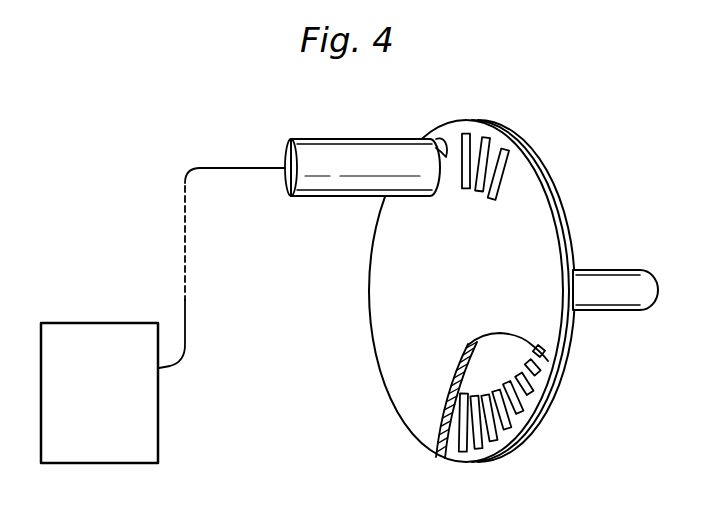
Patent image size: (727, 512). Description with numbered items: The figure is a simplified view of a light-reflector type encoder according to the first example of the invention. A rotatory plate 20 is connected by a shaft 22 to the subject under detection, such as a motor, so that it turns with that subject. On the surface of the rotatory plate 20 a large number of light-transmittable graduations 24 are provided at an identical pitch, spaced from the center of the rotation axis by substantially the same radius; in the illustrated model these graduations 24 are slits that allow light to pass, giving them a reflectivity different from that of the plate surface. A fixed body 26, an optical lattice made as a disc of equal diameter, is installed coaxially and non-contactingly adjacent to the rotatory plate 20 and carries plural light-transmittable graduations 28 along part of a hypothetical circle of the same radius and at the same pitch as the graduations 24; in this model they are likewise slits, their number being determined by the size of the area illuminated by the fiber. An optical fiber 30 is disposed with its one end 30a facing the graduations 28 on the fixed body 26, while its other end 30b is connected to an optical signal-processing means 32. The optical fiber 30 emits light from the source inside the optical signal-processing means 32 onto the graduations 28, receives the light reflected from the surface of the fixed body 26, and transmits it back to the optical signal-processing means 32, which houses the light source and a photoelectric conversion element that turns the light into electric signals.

The rotatory plate 20 is at (546, 390).
The shaft 22 is at (638, 278).
The light-transmittable graduations 24 is at (510, 436).
The fixed body 26 is at (537, 200).
The light-transmittable graduations 28 is at (500, 160).
The optical fiber 30 is at (345, 140).
The end of optical fiber 30a is at (440, 137).
The other end of optical fiber 30b is at (160, 368).
The optical signal-processing means 32 is at (152, 452).